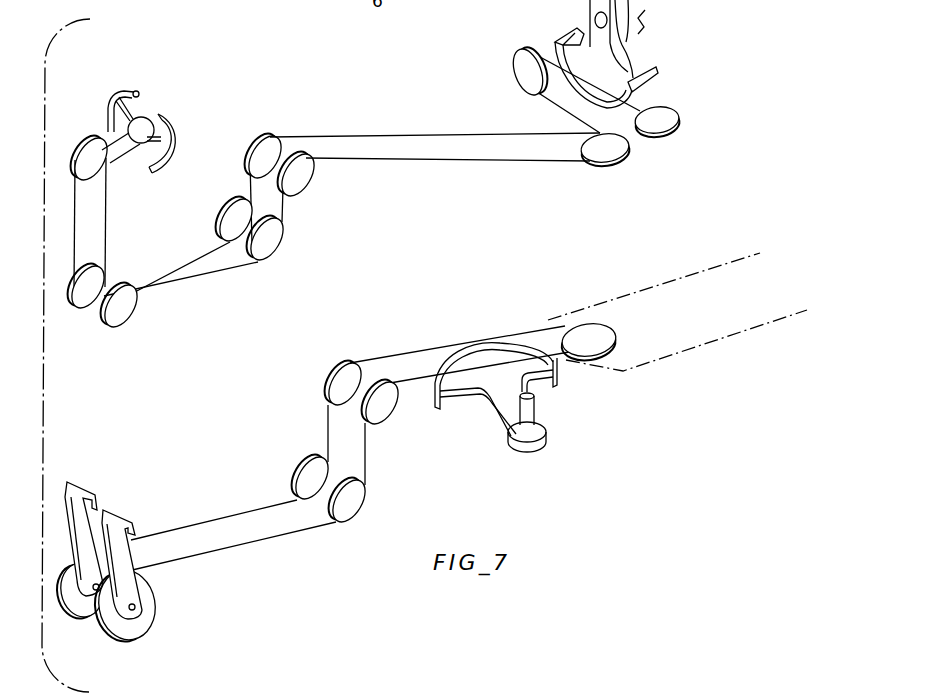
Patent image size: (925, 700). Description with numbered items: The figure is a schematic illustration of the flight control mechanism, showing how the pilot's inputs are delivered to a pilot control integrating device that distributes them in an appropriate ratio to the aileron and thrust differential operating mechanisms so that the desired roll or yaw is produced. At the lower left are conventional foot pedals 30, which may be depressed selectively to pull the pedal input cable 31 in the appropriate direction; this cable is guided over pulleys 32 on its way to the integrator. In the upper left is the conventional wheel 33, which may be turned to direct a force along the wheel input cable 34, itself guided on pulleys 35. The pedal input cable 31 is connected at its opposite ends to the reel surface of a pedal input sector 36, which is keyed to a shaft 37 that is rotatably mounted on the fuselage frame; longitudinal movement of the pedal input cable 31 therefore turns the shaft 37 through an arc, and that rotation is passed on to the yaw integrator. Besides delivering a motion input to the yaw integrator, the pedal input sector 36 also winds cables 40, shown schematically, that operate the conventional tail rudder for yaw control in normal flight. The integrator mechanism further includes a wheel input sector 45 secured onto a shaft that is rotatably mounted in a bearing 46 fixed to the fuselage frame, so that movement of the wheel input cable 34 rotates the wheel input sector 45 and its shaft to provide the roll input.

The foot pedals 30 is at (110, 550).
The pedal input cable 31 is at (266, 540).
The pulleys 32 is at (345, 377).
The wheel 33 is at (165, 122).
The wheel input cable 34 is at (381, 138).
The pulleys 35 is at (263, 155).
The pedal input sector 36 is at (505, 402).
The shaft 37 is at (528, 410).
The cables 40 is at (698, 273).
The wheel input sector 45 is at (556, 44).
The bearing 46 is at (633, 12).